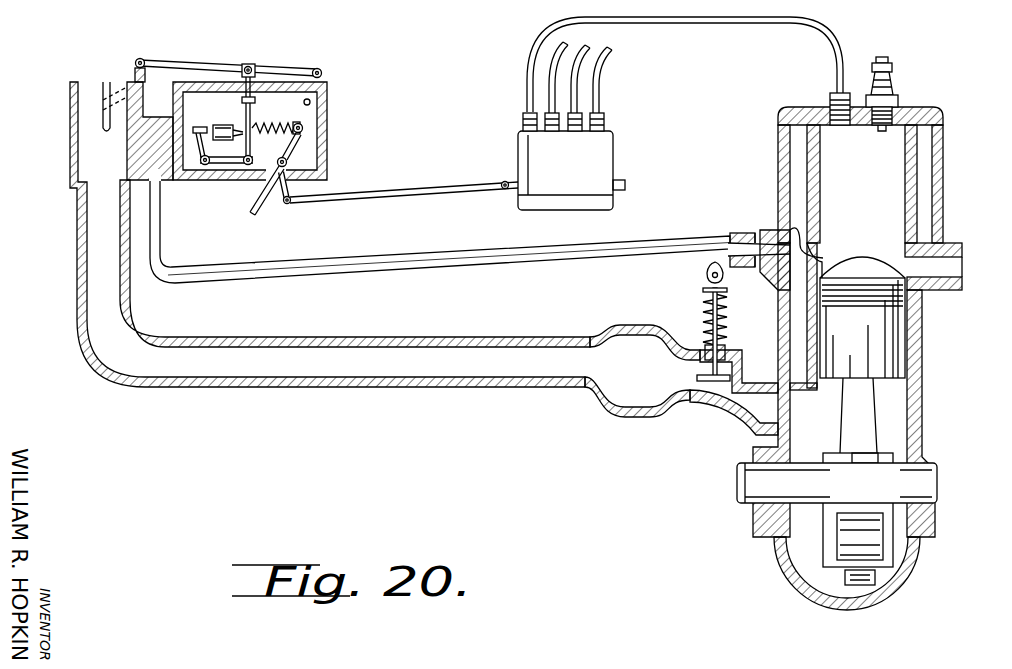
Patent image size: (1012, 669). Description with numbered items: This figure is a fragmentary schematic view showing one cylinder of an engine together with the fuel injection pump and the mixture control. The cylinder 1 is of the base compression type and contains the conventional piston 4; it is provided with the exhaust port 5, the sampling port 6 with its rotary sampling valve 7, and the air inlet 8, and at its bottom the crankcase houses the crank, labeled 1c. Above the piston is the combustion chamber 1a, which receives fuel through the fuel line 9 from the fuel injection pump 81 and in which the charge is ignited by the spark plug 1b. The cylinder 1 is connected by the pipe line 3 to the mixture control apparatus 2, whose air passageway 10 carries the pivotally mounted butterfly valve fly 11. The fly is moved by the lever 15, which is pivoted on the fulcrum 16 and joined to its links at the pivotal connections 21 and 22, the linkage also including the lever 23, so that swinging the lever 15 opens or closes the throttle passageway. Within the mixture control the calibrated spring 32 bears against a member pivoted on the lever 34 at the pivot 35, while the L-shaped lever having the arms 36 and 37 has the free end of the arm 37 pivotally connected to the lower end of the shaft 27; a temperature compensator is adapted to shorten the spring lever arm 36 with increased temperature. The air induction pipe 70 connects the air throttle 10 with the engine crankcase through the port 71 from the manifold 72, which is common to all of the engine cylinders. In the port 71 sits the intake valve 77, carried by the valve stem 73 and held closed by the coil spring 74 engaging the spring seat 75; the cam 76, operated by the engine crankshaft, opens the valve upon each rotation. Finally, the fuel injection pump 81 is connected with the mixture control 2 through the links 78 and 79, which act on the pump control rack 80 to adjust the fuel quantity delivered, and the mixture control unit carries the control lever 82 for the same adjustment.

The cylinder 1 is at (913, 378).
The combustion chamber 1a is at (890, 147).
The spark plug 1b is at (893, 80).
The crankshaft 1c is at (746, 484).
The mixture control apparatus 2 is at (172, 180).
The pipe line 3 is at (653, 242).
The piston 4 is at (873, 320).
The exhaust port 5 is at (957, 264).
The sampling port 6 is at (821, 264).
The rotary sampling valve 7 is at (772, 233).
The air inlet 8 is at (768, 312).
The fuel line 9 is at (835, 70).
The air passageway 10 is at (90, 96).
The butterfly valve fly 11 is at (103, 126).
The lever 15 is at (204, 61).
The fulcrum 16 is at (250, 65).
The pivotal connection 21 is at (138, 58).
The pivotal connection 22 is at (320, 69).
The lever 23 is at (287, 163).
The shaft 27 is at (243, 113).
The calibrated spring 32 is at (309, 103).
The lever 34 is at (305, 151).
The pivot 35 is at (305, 126).
The arm 36 is at (202, 150).
The arm 37 is at (224, 165).
The air induction pipe 70 is at (440, 379).
The port 71 is at (747, 428).
The manifold 72 is at (622, 384).
The valve stem 73 is at (703, 320).
The coil spring 74 is at (728, 309).
The spring seat 75 is at (703, 290).
The cam 76 is at (707, 271).
The intake valve 77 is at (725, 381).
The link 78 is at (277, 203).
The link 79 is at (387, 192).
The pump control rack 80 is at (513, 192).
The fuel injection pump 81 is at (598, 150).
The control lever 82 is at (252, 218).